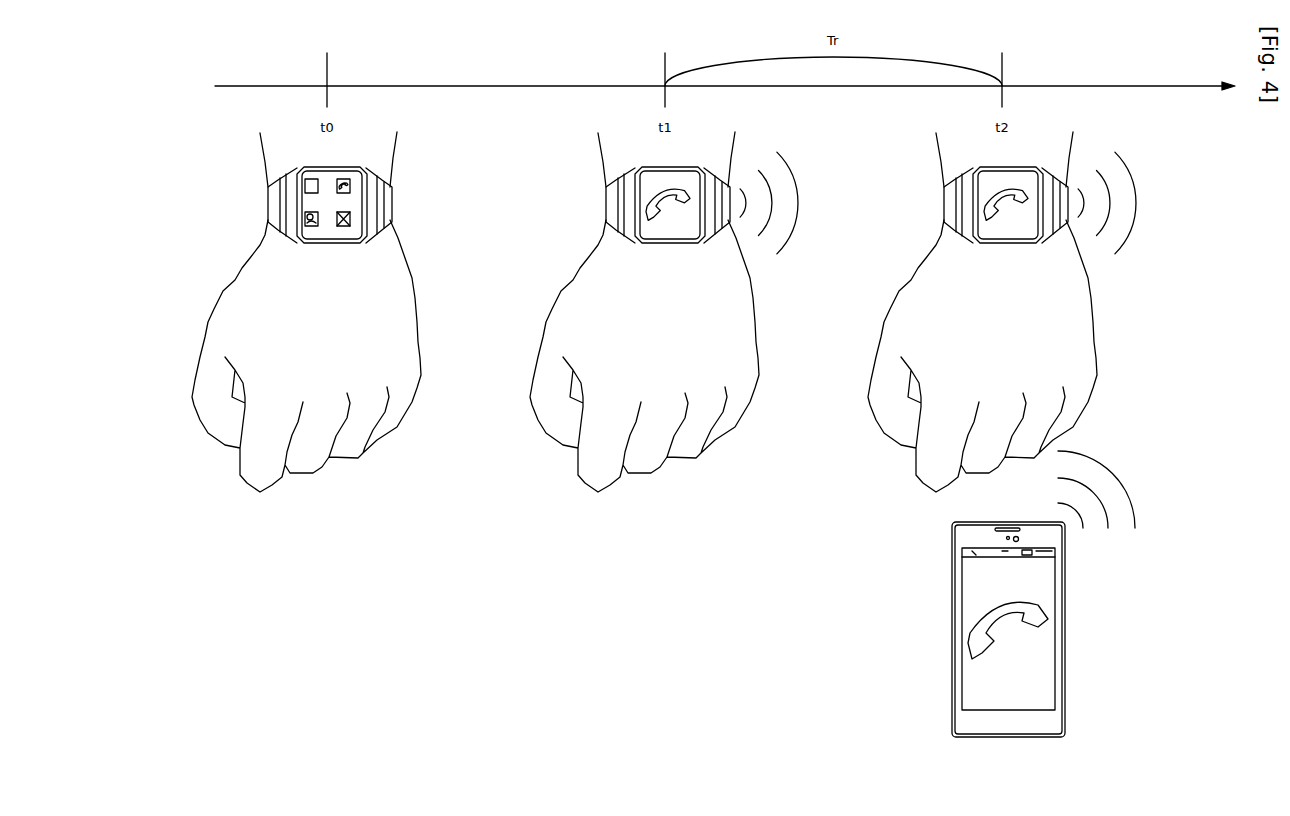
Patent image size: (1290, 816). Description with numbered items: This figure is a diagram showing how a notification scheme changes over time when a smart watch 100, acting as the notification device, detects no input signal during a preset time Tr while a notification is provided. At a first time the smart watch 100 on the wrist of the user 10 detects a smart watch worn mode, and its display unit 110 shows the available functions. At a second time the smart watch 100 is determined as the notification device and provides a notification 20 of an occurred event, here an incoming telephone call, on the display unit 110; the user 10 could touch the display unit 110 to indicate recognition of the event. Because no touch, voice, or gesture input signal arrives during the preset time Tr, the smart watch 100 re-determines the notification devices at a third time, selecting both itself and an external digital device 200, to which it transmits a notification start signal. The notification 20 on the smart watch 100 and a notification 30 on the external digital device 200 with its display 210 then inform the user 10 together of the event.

The user 10 is at (272, 270).
The smart watch 100 is at (375, 217).
The display unit 110 is at (342, 233).
The notification 20 is at (678, 203).
The external digital device 200 is at (1003, 629).
The display unit of mobile terminal 210 is at (1001, 629).
The notification 30 is at (1037, 615).